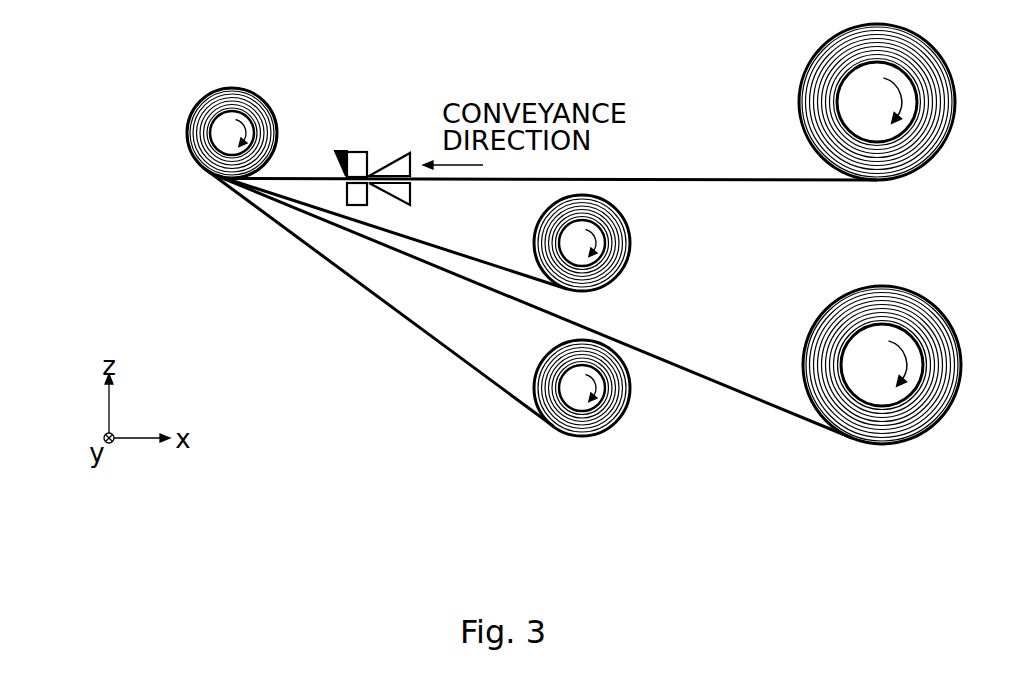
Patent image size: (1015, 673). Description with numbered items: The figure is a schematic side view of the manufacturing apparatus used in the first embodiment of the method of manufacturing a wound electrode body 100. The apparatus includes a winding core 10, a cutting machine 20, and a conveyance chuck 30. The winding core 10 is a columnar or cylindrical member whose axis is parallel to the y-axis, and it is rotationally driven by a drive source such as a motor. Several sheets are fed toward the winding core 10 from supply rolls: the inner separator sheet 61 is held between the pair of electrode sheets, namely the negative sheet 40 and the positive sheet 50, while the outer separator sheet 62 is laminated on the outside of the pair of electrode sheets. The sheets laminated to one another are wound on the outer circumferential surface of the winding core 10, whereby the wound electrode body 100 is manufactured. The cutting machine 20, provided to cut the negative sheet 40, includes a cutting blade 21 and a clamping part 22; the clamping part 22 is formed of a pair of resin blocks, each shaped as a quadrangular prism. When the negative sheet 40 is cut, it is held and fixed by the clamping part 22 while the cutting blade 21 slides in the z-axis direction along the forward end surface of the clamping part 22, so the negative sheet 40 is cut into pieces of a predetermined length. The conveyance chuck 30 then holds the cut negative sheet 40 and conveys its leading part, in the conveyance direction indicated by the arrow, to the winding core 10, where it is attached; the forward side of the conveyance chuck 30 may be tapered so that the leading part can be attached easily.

The winding core 10 is at (207, 100).
The wound electrode body 100 is at (231, 90).
The cutting machine 20 is at (373, 84).
The cutting blade 21 is at (339, 151).
The clamping part 22 is at (358, 151).
The conveyance chuck 30 is at (402, 152).
The negative sheet 40 is at (742, 177).
The positive sheet 50 is at (729, 381).
The inner separator sheet 61 is at (470, 254).
The outer separator sheet 62 is at (443, 348).